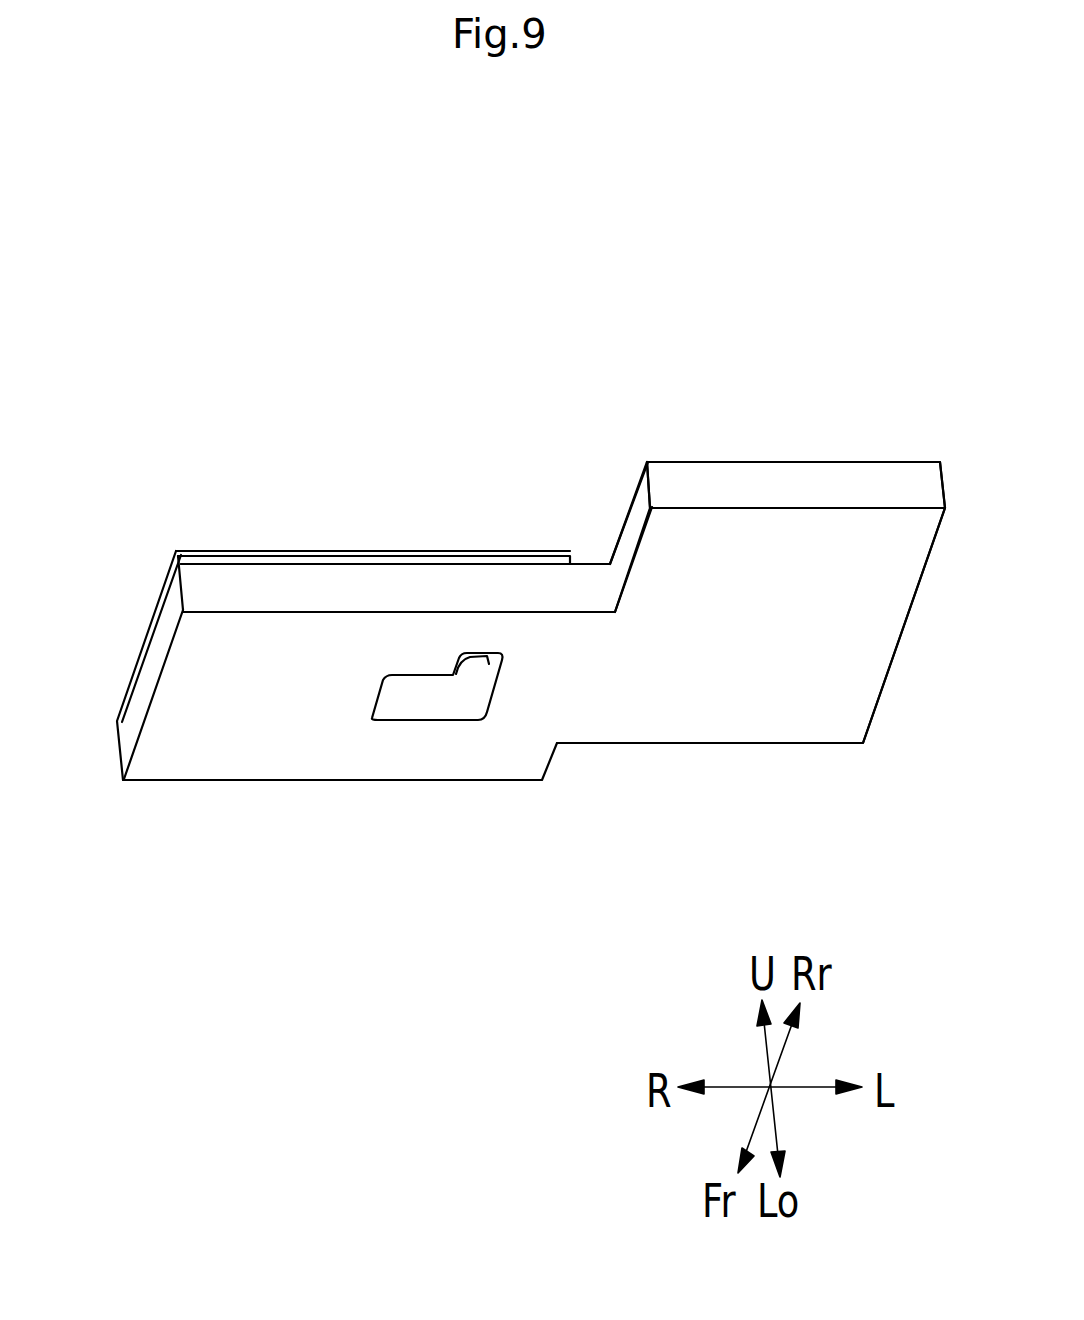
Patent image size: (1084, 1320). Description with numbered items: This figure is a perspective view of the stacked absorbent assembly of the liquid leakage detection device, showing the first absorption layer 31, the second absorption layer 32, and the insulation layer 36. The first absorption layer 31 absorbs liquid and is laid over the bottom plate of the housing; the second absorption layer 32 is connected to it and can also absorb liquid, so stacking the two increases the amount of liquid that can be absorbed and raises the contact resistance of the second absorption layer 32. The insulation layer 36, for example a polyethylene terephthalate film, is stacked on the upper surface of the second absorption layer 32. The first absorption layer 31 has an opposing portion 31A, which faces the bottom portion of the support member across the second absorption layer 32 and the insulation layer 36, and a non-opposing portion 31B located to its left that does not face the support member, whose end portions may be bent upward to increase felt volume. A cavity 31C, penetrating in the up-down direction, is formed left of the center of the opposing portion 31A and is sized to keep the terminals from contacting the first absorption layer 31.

The first absorption layer 31 is at (497, 668).
The opposing portion 31A is at (150, 642).
The non-opposing portion 31B is at (770, 745).
The cavity 31C is at (377, 706).
The second absorption layer 32 is at (173, 560).
The insulation layer 36 is at (173, 553).